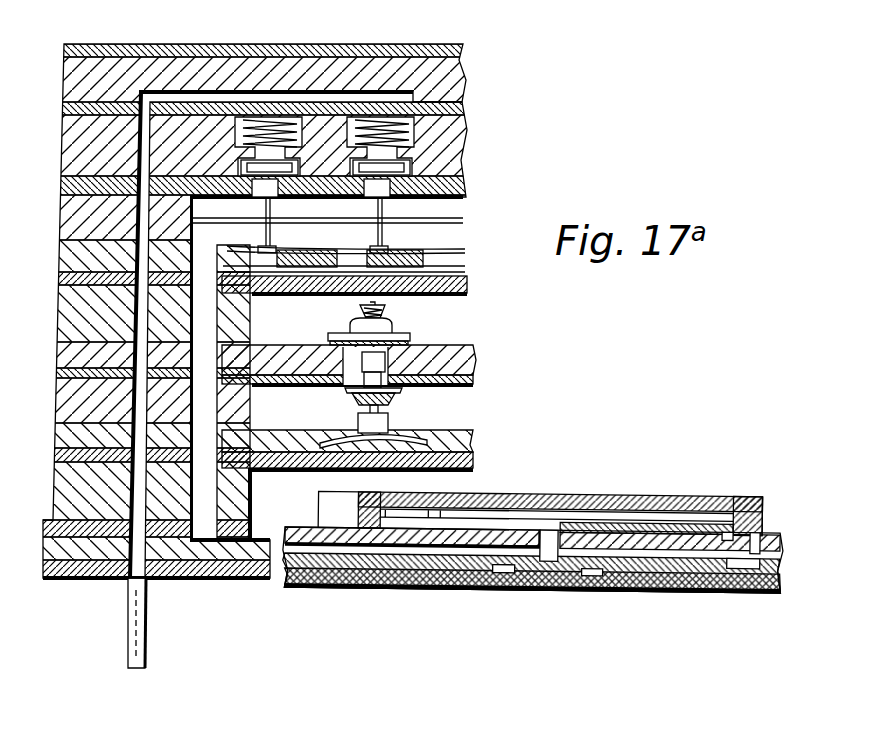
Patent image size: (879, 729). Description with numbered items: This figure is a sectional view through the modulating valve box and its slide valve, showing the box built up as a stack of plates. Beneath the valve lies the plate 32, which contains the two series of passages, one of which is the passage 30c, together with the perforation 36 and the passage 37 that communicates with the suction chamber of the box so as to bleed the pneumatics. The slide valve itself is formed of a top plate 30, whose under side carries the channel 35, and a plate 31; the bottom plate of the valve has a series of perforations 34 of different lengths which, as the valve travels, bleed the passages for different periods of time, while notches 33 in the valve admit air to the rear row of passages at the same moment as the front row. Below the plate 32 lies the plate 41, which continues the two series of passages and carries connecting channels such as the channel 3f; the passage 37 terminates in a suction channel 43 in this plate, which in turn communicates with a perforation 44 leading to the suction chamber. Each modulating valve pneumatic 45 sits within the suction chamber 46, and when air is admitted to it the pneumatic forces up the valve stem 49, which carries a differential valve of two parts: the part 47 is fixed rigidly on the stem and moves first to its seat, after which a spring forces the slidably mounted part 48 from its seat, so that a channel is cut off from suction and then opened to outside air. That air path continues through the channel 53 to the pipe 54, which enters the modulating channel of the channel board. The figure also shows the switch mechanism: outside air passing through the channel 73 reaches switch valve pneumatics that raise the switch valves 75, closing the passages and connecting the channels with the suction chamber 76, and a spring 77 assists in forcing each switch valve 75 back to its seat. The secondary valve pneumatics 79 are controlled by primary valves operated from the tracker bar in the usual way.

The top plate 30 is at (648, 503).
The passage 30c is at (773, 523).
The plate 31 is at (600, 523).
The plate 32 is at (420, 533).
The notches 33 is at (755, 528).
The perforations 34 is at (722, 527).
The channel 35 is at (537, 517).
The perforation 36 is at (556, 545).
The channel 3f is at (505, 572).
The passage 37 is at (480, 514).
The plate 41 is at (687, 568).
The suction channel 43 is at (342, 548).
The perforation 44 is at (205, 503).
The modulating valve pneumatic 45 is at (400, 430).
The suction chamber 46 is at (455, 400).
The valve part 47 is at (350, 397).
The valve part 48 is at (343, 336).
The valve stem 49 is at (385, 304).
The channel 53 is at (340, 102).
The pipe 54 is at (143, 633).
The channel 73 is at (460, 272).
The switch valves 75 is at (455, 180).
The suction chamber 76 is at (447, 205).
The spring 77 is at (405, 140).
The secondary valve pneumatics 79 is at (278, 253).